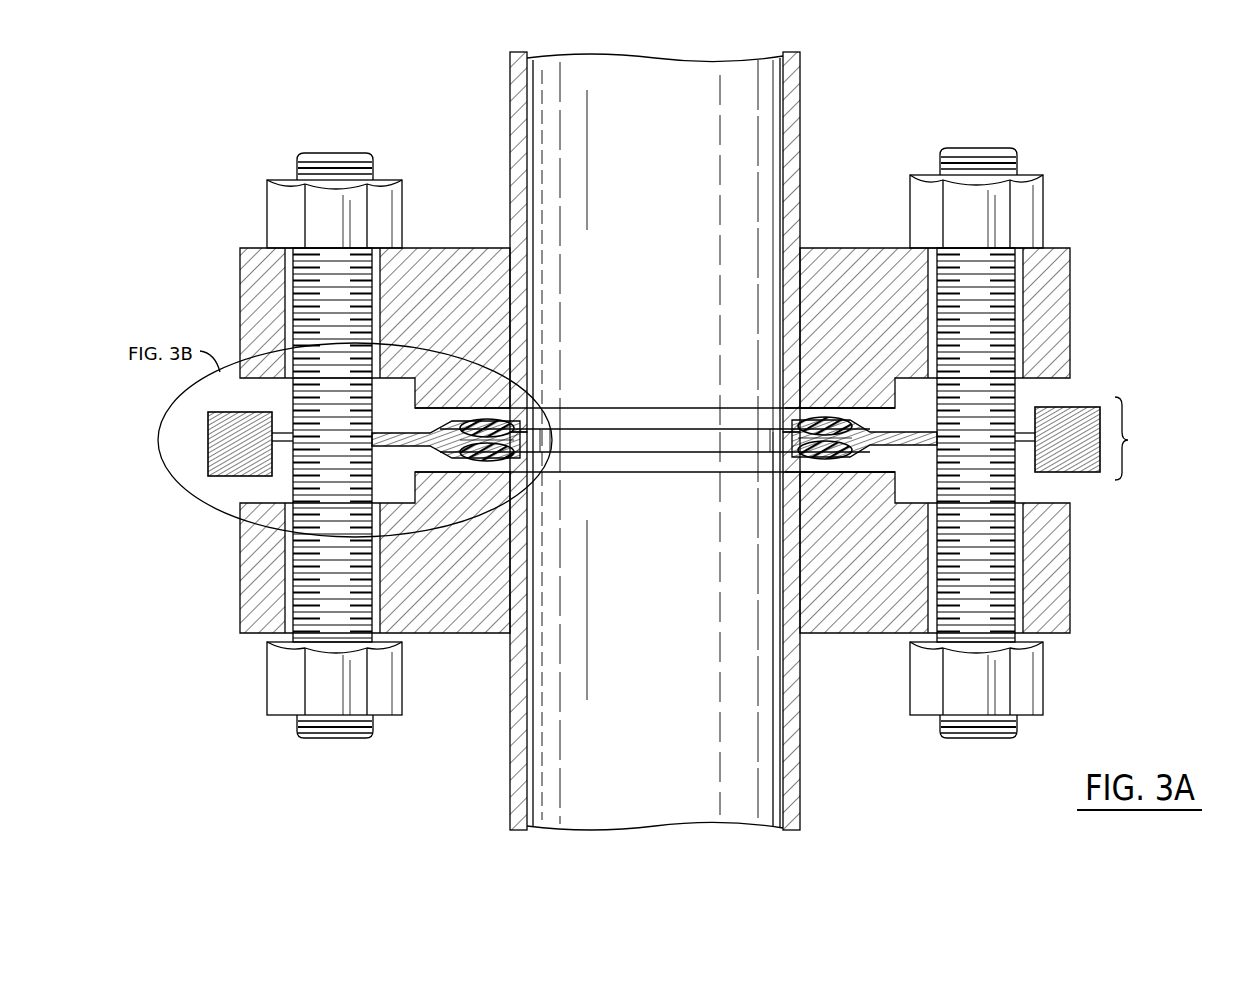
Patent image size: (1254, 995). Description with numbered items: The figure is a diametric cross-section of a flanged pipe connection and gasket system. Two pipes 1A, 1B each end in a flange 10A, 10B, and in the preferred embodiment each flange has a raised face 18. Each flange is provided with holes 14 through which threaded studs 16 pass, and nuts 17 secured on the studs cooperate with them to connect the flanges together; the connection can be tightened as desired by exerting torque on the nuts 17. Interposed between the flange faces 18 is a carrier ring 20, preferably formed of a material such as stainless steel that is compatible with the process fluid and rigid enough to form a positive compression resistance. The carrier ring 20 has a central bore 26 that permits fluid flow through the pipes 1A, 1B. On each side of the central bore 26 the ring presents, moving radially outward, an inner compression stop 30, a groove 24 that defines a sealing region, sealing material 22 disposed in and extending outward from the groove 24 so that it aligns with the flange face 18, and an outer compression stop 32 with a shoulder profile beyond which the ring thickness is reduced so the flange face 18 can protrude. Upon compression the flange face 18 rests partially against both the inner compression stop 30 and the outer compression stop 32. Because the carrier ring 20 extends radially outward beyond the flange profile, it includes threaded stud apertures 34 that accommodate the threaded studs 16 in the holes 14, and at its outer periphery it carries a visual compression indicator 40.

The pipe 1A is at (798, 122).
The pipe 1B is at (798, 805).
The flange 10A is at (871, 324).
The flange 10B is at (871, 569).
The holes 14 is at (286, 277).
The threaded studs 16 is at (315, 152).
The nuts 17 is at (343, 192).
The raised face 18 is at (822, 408).
The carrier ring 20 is at (1135, 438).
The sealing material 22 is at (462, 456).
The groove 24 is at (515, 458).
The central bore 26 is at (646, 432).
The inner compression stop 30 is at (527, 427).
The outer compression stop 32 is at (435, 437).
The threaded stud apertures 34 is at (320, 418).
The visual compression indicator 40 is at (218, 470).